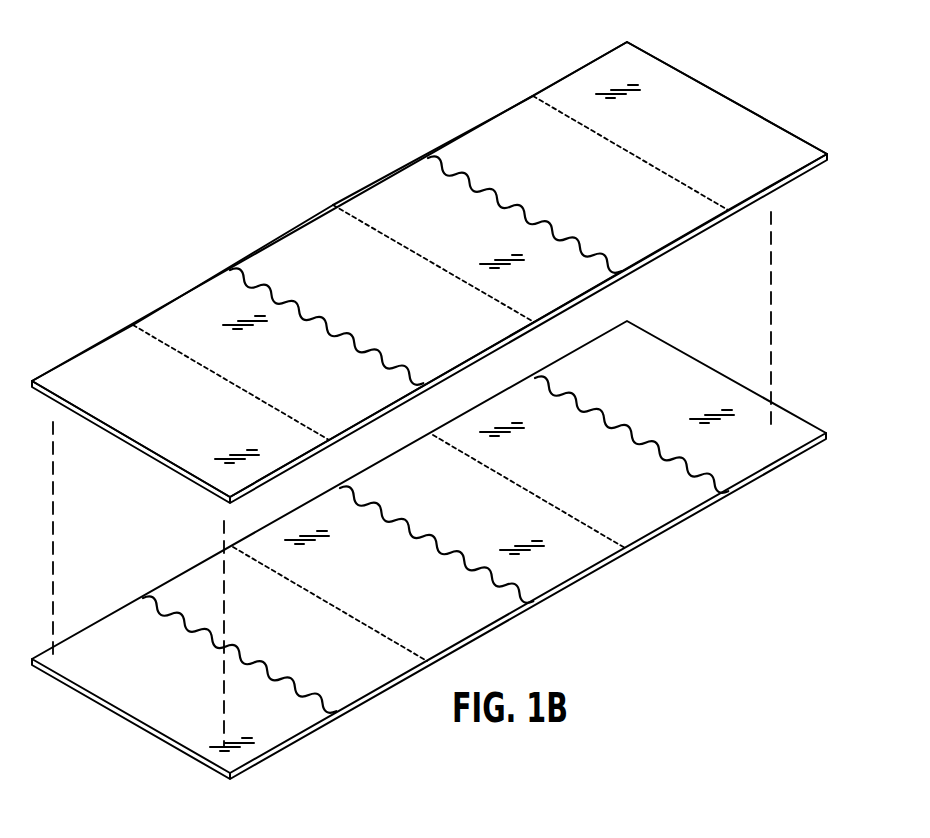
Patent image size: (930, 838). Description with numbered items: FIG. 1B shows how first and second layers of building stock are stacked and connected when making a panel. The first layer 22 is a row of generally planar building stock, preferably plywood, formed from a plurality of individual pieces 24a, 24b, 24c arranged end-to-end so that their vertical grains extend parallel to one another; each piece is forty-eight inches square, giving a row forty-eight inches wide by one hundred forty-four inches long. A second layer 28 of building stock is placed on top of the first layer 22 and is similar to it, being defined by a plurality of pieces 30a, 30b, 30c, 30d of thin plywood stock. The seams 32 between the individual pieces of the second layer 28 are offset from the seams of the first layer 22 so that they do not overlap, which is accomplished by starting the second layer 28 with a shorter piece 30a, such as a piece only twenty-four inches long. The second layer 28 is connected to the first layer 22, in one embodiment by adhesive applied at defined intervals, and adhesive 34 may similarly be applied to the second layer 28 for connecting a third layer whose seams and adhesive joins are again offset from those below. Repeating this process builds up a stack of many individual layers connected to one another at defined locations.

The first layer of building stock 22 is at (683, 535).
The first building stock piece 24a is at (277, 732).
The second building stock piece 24b is at (573, 563).
The third building stock piece 24c is at (768, 455).
The second layer of building stock 28 is at (452, 477).
The shorter piece of second layer 30a is at (97, 360).
The second piece of second layer 30b is at (297, 243).
The third piece of second layer 30c is at (503, 127).
The fourth piece of second layer 30d is at (610, 67).
The seams 32 is at (152, 332).
The adhesive 34 is at (232, 273).